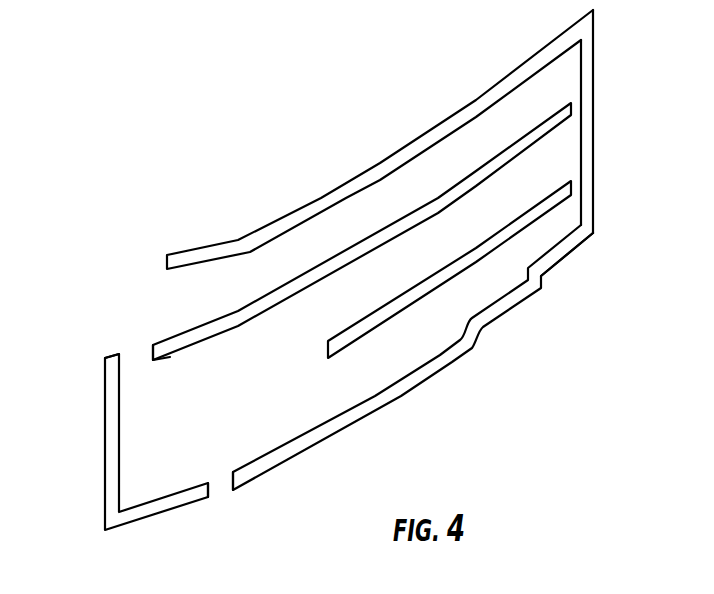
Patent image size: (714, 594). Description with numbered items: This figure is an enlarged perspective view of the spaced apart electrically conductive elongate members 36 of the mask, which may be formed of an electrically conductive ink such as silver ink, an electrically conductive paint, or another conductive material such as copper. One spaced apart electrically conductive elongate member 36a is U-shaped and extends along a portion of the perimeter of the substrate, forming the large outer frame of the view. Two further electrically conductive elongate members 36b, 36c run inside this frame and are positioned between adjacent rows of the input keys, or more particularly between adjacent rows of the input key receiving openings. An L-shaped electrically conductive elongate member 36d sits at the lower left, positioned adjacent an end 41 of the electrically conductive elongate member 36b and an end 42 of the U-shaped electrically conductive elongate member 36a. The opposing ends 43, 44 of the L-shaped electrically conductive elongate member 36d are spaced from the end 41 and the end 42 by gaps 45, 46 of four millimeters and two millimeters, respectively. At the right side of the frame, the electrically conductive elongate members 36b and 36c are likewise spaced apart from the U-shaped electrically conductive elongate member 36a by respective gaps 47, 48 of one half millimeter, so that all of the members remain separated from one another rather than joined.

The spaced apart electrically conductive elongate members 36 is at (142, 190).
The U-shaped electrically conductive elongate member 36a is at (321, 197).
The electrically conductive elongate member 36b is at (538, 127).
The electrically conductive elongate member 36c is at (543, 197).
The L-shaped electrically conductive elongate member 36d is at (103, 481).
The end 41 is at (152, 350).
The end 42 is at (236, 495).
The end 43 is at (107, 355).
The end 44 is at (207, 497).
The gap 45 is at (137, 356).
The gap 46 is at (225, 484).
The gap 47 is at (577, 108).
The gap 48 is at (578, 190).